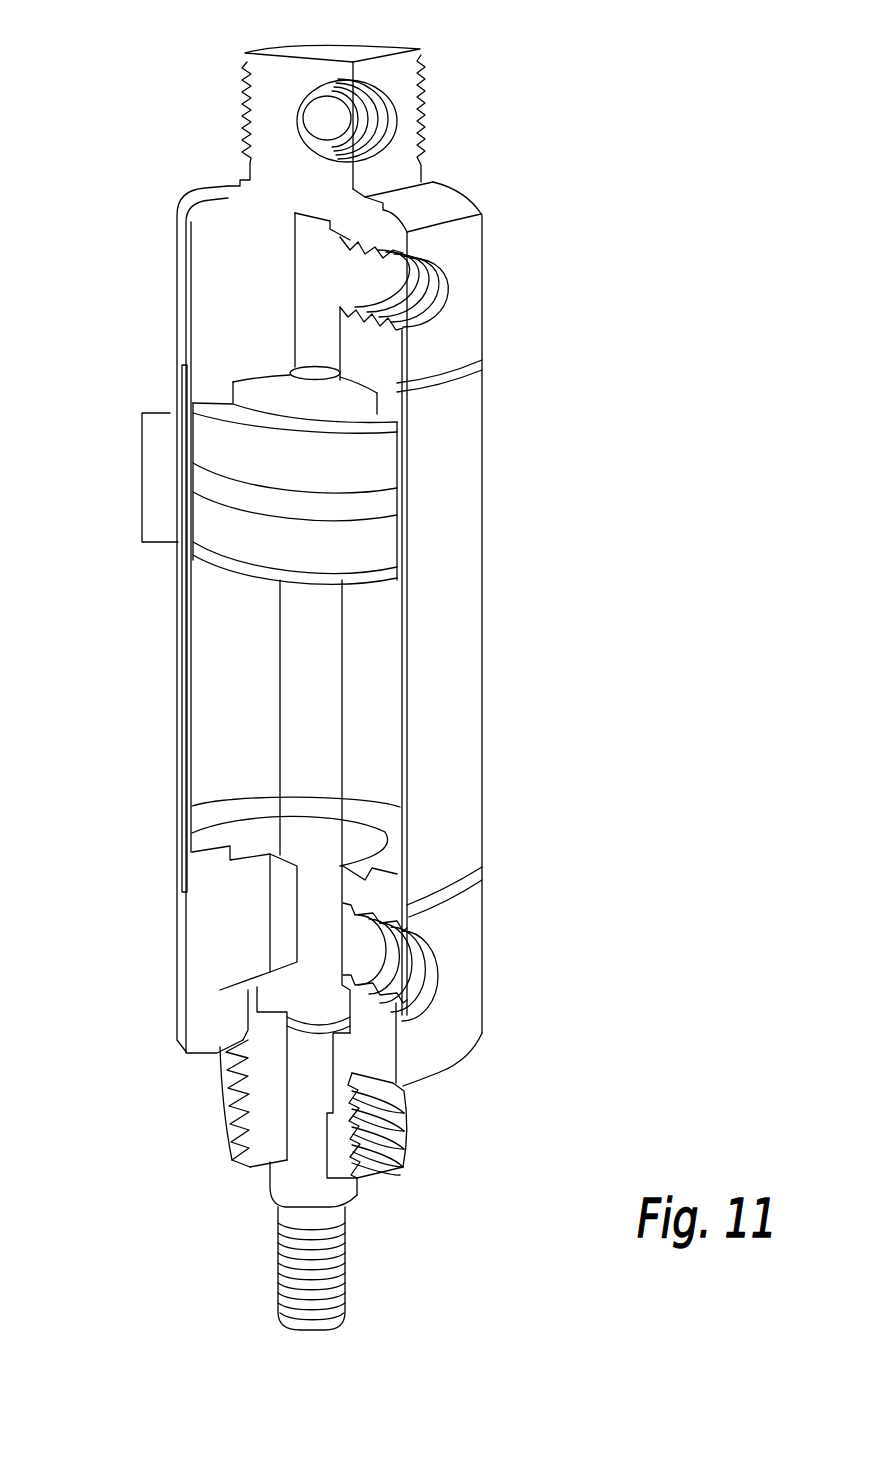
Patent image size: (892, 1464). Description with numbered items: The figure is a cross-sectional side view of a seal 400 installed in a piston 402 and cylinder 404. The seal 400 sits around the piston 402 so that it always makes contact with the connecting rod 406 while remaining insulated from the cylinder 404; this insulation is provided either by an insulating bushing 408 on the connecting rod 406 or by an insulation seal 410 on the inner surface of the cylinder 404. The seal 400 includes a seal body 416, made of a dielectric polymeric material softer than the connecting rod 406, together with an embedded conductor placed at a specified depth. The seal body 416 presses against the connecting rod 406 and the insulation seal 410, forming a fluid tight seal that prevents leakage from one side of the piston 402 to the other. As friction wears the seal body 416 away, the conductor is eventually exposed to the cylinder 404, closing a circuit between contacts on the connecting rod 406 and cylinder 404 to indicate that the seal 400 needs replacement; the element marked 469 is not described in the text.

The seal 400 is at (420, 532).
The piston 402 is at (142, 477).
The cylinder 404 is at (438, 820).
The connecting rod 406 is at (315, 985).
The insulating bushing 408 is at (313, 1083).
The insulation seal 410 is at (178, 883).
The seal body 416 is at (377, 547).
The piston grooves 469 is at (340, 557).